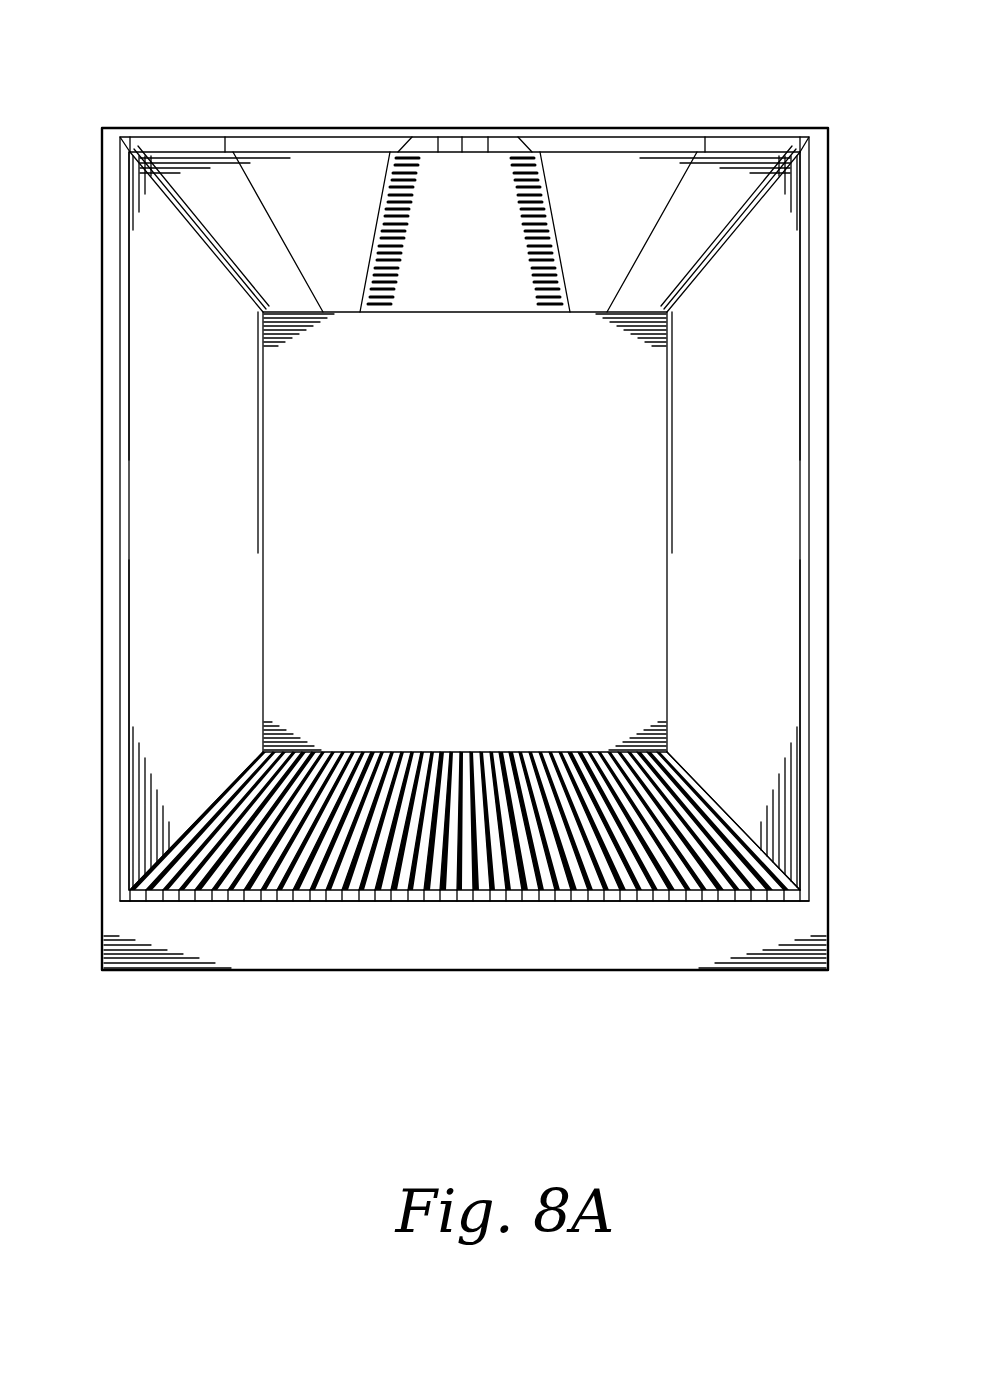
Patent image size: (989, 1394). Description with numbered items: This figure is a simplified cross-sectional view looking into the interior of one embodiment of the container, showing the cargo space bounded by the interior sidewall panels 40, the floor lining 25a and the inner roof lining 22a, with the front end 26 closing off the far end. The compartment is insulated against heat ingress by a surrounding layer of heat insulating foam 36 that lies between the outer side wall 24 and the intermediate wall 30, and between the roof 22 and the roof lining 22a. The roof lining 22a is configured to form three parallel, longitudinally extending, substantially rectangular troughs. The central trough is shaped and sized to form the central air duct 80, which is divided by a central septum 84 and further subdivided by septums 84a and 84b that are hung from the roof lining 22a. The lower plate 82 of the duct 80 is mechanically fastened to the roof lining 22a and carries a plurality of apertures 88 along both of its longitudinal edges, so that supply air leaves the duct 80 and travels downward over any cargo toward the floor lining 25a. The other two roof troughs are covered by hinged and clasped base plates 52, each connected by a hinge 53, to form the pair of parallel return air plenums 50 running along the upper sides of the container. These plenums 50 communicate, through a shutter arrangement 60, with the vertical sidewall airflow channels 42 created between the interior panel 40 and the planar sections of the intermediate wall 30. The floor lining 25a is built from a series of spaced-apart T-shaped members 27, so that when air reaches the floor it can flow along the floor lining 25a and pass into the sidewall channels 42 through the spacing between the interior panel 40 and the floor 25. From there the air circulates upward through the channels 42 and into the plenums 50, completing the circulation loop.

The roof 22 is at (415, 128).
The roof lining 22a is at (202, 137).
The side wall 24 is at (101, 698).
The floor lining 25 is at (587, 970).
The floor lining 25a is at (366, 897).
The front end 26 is at (471, 574).
The T-shaped members 27 is at (383, 753).
The intermediate wall 30 is at (122, 530).
The heat insulating foam 36 is at (112, 312).
The interior wall panel 40 is at (128, 587).
The airflow channels 42 is at (127, 455).
The plenum 50 is at (162, 145).
The plenum base plate 52 is at (238, 212).
The hinge 53 is at (213, 252).
The shutter arrangement 60 is at (130, 147).
The central duct 80 is at (474, 282).
The lower plate 82 is at (483, 234).
The central septum 84 is at (470, 144).
The septum 84a is at (440, 143).
The septum 84b is at (490, 145).
The apertures 88 is at (385, 224).